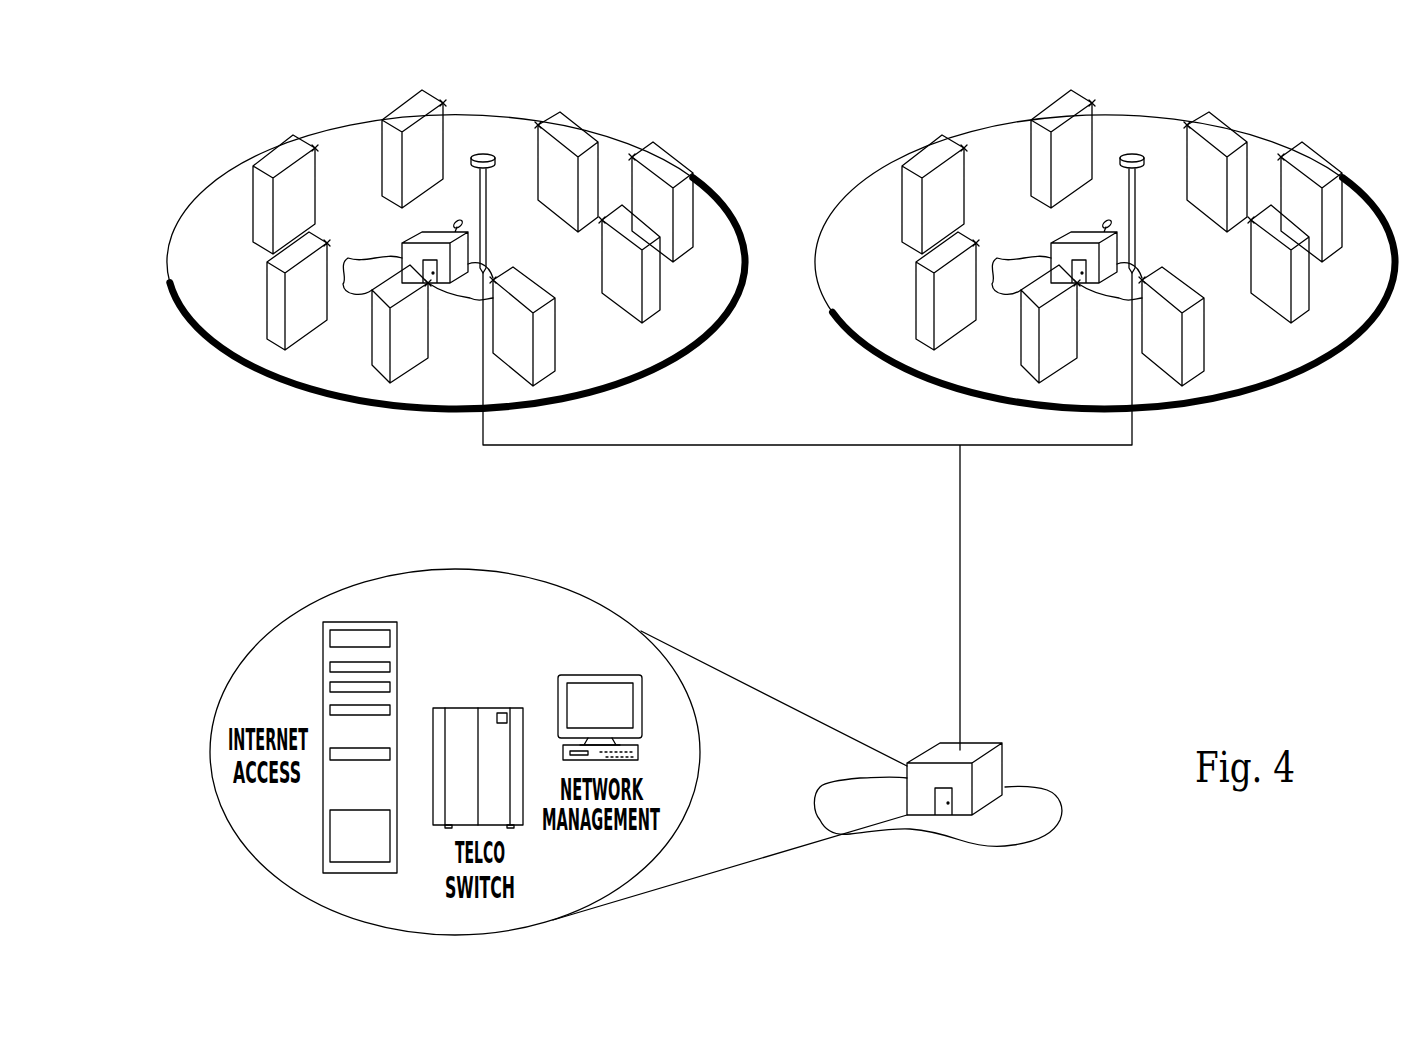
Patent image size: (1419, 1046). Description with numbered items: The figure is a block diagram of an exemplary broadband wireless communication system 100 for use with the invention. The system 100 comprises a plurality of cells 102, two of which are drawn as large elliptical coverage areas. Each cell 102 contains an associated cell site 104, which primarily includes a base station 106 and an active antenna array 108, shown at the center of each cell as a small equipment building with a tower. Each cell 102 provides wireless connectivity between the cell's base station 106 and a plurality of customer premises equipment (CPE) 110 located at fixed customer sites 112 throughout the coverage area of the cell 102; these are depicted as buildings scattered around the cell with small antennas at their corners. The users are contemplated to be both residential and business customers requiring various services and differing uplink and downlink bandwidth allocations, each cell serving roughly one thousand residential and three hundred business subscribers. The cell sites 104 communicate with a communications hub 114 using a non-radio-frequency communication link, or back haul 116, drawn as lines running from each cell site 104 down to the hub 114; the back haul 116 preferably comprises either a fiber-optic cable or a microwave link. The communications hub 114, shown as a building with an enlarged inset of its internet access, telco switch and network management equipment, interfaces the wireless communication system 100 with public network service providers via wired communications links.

The wireless communication system 100 is at (760, 117).
The cell 102 is at (210, 202).
The cell site 104 is at (360, 293).
The base station 106 is at (407, 237).
The active antenna array 108 is at (483, 155).
The customer premises equipment 110 is at (316, 147).
The fixed customer site 112 is at (407, 373).
The communications hub 114 is at (957, 825).
The back haul 116 is at (958, 543).